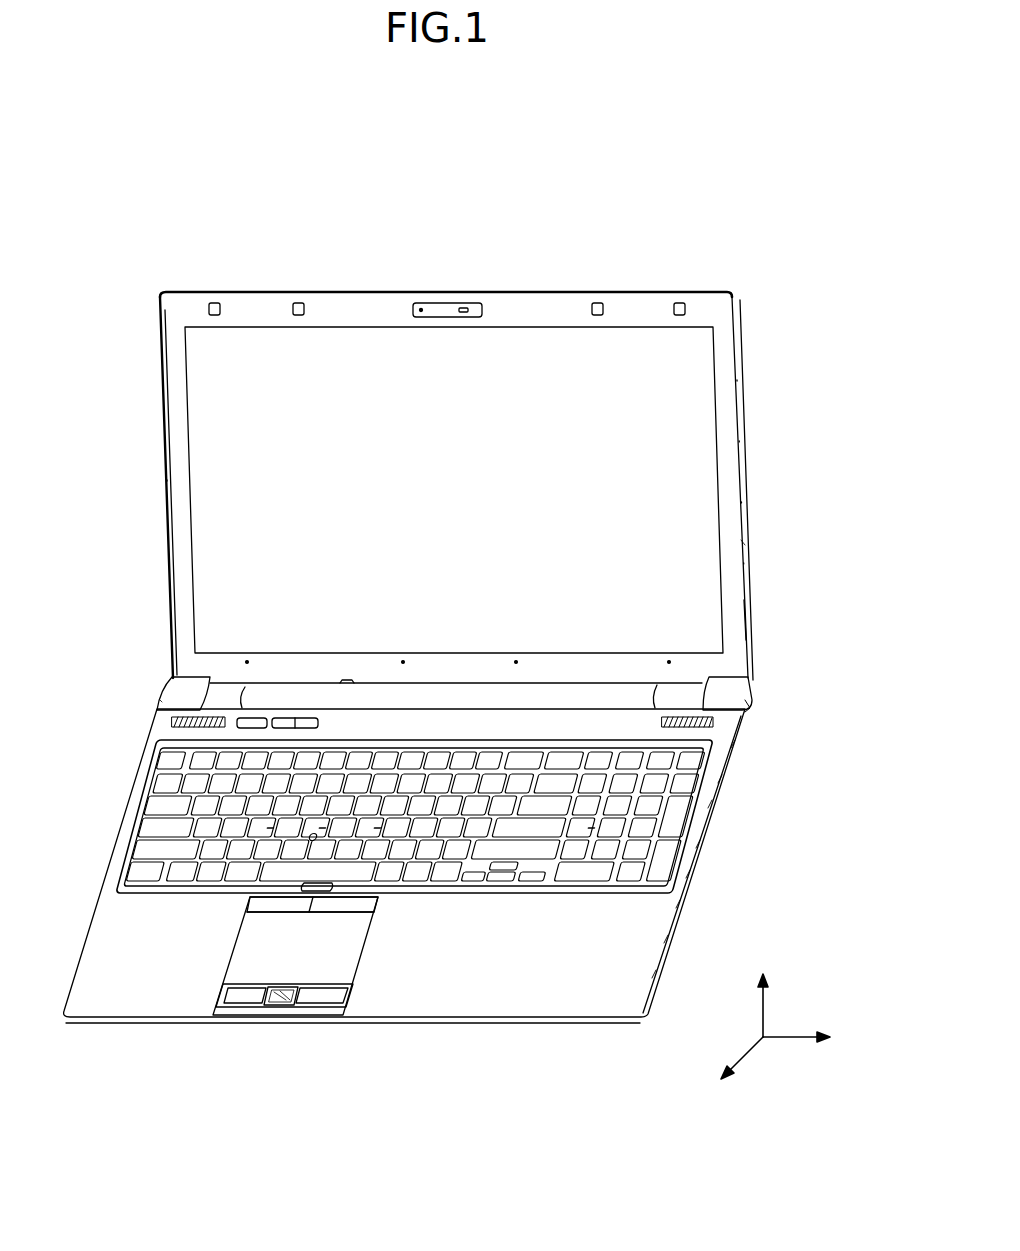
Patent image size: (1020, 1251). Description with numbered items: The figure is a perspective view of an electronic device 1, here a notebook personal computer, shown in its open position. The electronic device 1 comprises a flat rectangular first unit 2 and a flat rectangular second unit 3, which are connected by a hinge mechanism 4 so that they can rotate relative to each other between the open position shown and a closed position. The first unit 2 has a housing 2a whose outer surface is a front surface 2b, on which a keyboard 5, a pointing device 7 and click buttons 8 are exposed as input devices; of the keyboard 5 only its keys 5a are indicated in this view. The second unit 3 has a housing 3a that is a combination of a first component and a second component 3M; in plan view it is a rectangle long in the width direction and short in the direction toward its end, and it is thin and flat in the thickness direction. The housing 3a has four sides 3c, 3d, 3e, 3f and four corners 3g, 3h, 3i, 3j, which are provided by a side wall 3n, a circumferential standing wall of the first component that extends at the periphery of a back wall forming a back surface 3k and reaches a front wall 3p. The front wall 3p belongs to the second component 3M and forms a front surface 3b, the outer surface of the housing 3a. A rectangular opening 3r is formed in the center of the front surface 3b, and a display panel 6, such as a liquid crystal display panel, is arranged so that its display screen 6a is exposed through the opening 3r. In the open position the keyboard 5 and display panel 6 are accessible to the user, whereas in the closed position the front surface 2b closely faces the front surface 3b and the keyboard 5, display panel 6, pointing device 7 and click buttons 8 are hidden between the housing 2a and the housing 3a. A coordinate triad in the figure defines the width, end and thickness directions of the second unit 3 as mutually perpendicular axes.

The electronic device 1 is at (733, 230).
The first unit 2 is at (152, 1021).
The housing 2a is at (441, 856).
The front surface 2b is at (556, 1020).
The second unit 3 is at (228, 292).
The housing 3a is at (455, 467).
The front surface 3b is at (630, 300).
The side 3c is at (376, 292).
The side 3d is at (748, 482).
The side 3e is at (446, 683).
The side 3f is at (168, 536).
The corner 3g is at (164, 303).
The corner 3h is at (736, 298).
The corner 3i is at (752, 706).
The corner 3j is at (172, 690).
The back surface 3k is at (558, 340).
The second component 3M is at (734, 543).
The side wall 3n is at (454, 490).
The front wall 3p is at (742, 608).
The opening 3r is at (332, 337).
The hinge mechanism 4 is at (180, 682).
The keyboard 5 is at (681, 838).
The keys 5a is at (147, 840).
The display panel 6 is at (207, 460).
The display screen 6a is at (505, 340).
The pointing device 7 is at (270, 968).
The click buttons 8 is at (262, 915).